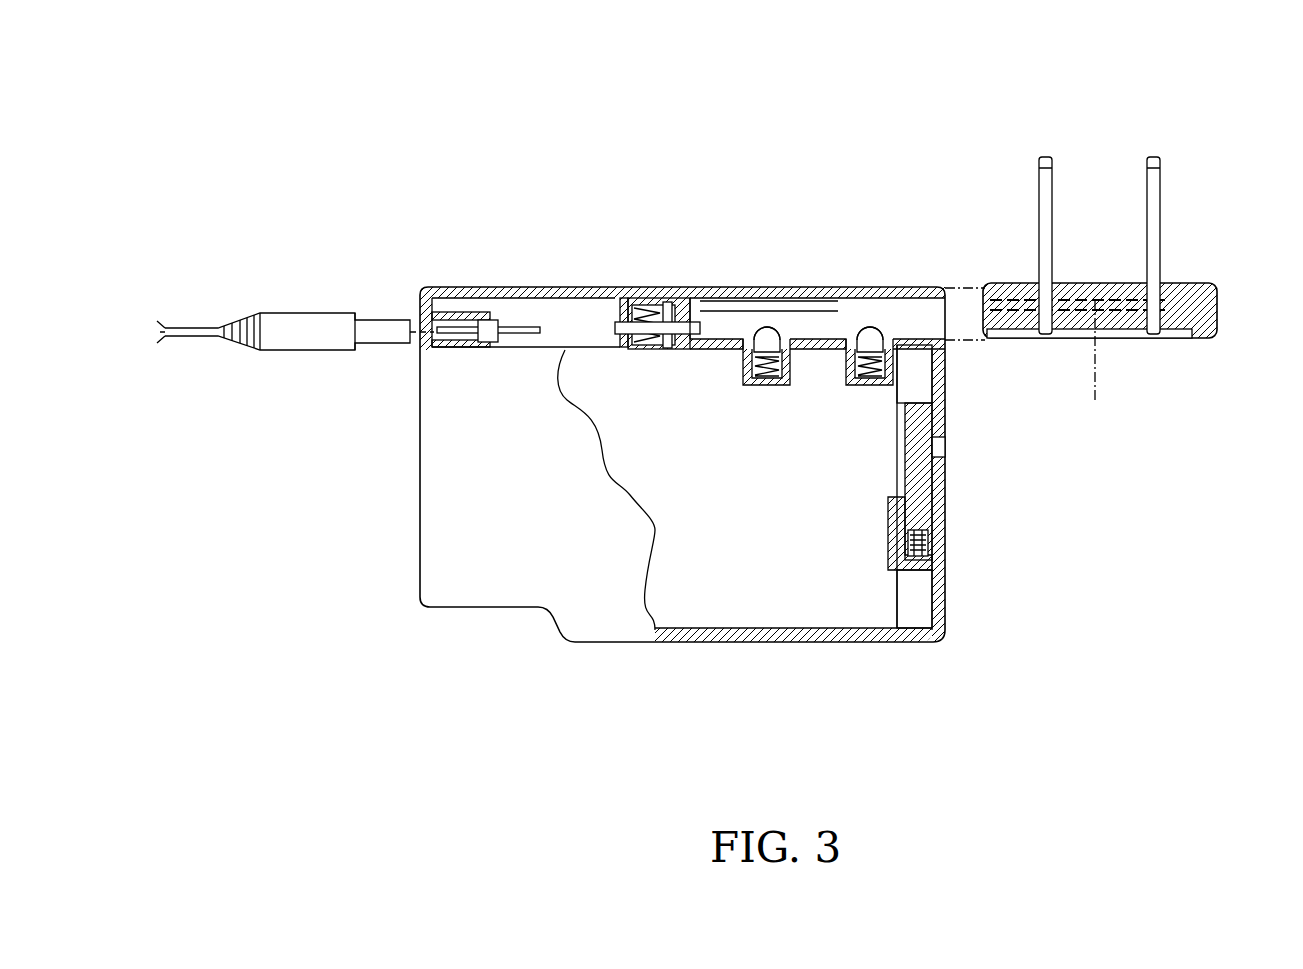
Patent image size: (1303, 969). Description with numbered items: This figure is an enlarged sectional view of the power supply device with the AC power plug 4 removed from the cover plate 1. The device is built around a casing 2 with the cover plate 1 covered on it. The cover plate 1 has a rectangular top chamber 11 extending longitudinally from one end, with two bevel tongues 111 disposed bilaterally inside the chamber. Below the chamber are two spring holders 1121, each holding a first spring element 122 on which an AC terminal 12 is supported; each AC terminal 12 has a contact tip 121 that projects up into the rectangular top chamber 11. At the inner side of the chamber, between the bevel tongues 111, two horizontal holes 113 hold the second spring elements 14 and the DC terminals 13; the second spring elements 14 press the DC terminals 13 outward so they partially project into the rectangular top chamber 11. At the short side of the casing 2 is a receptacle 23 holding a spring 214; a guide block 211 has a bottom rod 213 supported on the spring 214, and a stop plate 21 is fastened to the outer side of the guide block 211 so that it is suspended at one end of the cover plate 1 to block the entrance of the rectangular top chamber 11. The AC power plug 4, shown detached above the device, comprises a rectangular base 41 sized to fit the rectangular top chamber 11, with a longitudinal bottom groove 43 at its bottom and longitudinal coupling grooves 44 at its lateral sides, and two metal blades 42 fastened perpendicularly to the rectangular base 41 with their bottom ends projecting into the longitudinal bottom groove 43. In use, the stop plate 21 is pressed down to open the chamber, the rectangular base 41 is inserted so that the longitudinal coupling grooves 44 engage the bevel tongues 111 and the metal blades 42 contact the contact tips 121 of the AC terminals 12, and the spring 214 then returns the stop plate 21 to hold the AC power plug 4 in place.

The cover plate 1 is at (472, 288).
The casing 2 is at (458, 427).
The rectangular top chamber 11 is at (867, 298).
The bevel tongues 111 is at (720, 288).
The horizontal holes 113 is at (655, 288).
The AC terminals 12 is at (792, 320).
The contact tip 121 is at (766, 326).
The first spring elements 122 is at (753, 387).
The spring holders 1121 is at (847, 386).
The DC terminals 13 is at (688, 288).
The second spring elements 14 is at (630, 287).
The stop plate 21 is at (947, 378).
The guide block 211 is at (937, 482).
The bottom rod 213 is at (946, 575).
The spring 214 is at (943, 545).
The receptacle 23 is at (903, 515).
The AC power plug 4 is at (1111, 235).
The rectangular base 41 is at (1214, 288).
The metal blades 42 is at (1153, 195).
The longitudinal bottom groove 43 is at (1137, 338).
The longitudinal coupling grooves 44 is at (1101, 367).